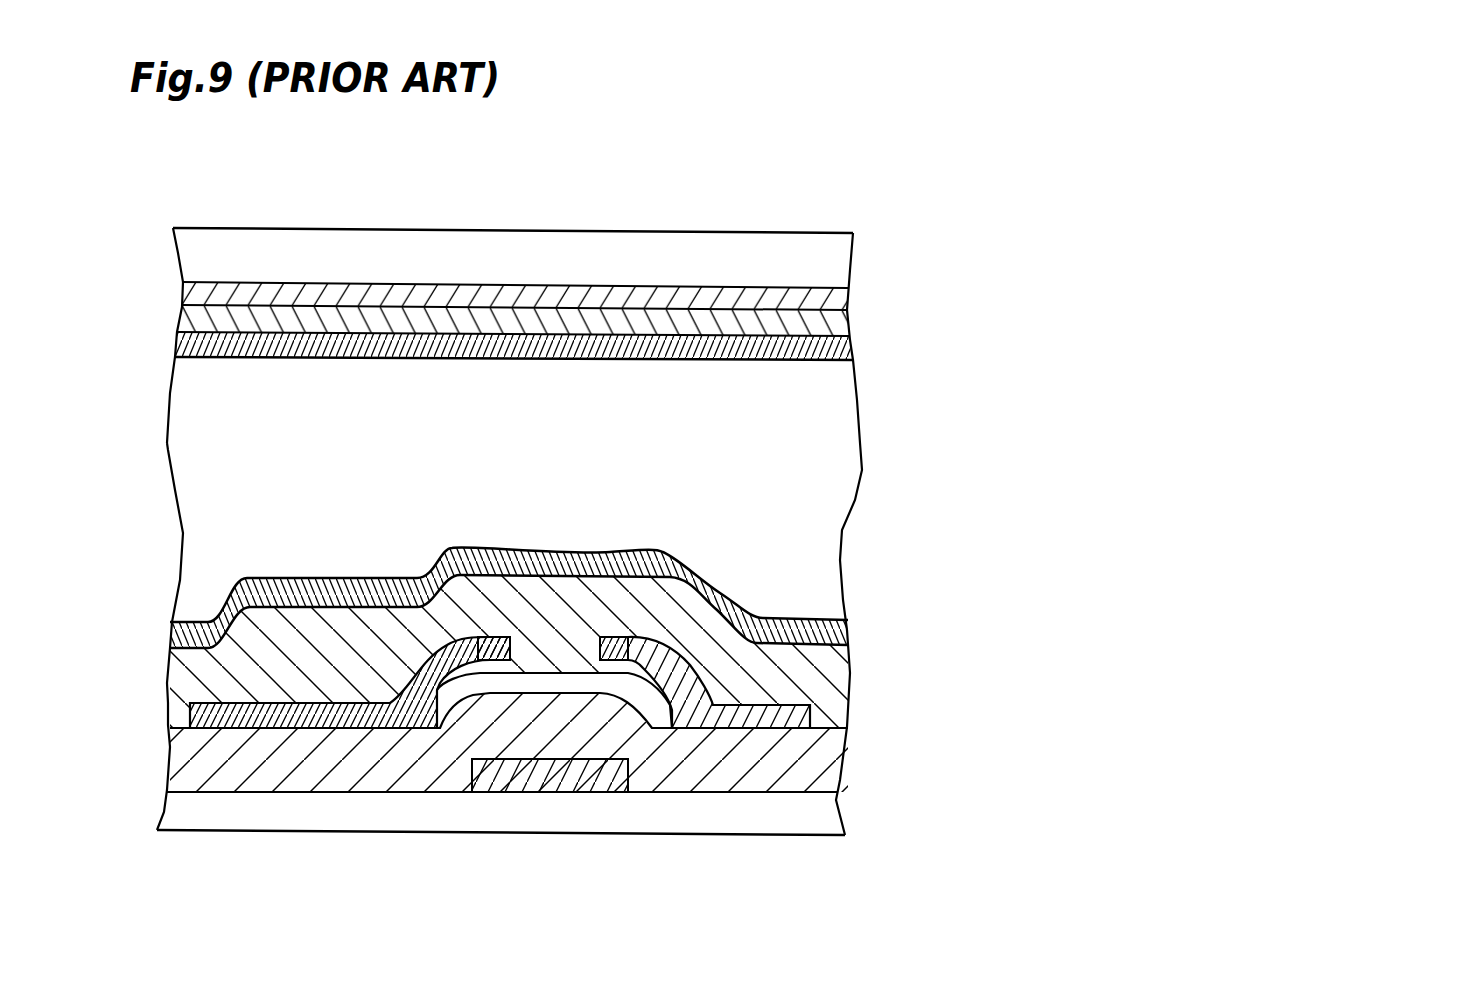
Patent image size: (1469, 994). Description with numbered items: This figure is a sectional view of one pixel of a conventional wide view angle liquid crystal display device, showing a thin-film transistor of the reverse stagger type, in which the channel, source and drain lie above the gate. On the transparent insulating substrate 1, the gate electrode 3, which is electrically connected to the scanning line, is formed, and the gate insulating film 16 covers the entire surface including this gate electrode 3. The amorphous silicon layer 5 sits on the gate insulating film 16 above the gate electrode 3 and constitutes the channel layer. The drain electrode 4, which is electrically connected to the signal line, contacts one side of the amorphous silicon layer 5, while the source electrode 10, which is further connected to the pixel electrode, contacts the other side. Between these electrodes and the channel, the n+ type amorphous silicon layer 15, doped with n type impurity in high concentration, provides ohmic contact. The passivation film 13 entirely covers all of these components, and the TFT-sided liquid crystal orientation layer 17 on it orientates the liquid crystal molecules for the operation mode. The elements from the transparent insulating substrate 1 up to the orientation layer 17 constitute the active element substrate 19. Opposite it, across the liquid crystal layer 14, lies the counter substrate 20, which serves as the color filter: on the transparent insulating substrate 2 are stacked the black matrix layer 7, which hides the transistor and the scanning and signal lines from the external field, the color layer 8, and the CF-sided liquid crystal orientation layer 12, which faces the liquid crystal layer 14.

The transparent insulating substrate 1 is at (802, 823).
The transparent insulating substrate 2 is at (582, 251).
The gate electrode 3 is at (490, 780).
The drain electrode 4 is at (224, 704).
The amorphous silicon layer 5 is at (603, 684).
The black matrix layer 7 is at (836, 298).
The color layer 8 is at (837, 317).
The source electrode 10 is at (812, 714).
The CF-sided liquid crystal orientation layer 12 is at (838, 352).
The passivation film 13 is at (833, 662).
The liquid crystal layer 14 is at (822, 552).
The n+ type amorphous silicon layer 15 is at (732, 560).
The gate insulating film 16 is at (833, 767).
The TFT-sided liquid crystal orientation layer 17 is at (828, 632).
The active element substrate 19 is at (779, 702).
The counter substrate 20 is at (817, 305).